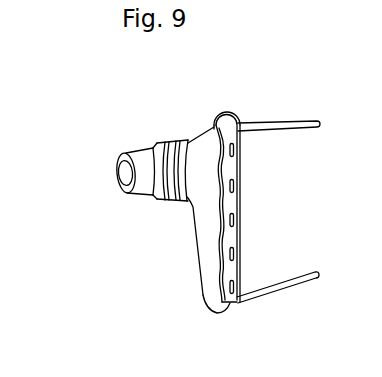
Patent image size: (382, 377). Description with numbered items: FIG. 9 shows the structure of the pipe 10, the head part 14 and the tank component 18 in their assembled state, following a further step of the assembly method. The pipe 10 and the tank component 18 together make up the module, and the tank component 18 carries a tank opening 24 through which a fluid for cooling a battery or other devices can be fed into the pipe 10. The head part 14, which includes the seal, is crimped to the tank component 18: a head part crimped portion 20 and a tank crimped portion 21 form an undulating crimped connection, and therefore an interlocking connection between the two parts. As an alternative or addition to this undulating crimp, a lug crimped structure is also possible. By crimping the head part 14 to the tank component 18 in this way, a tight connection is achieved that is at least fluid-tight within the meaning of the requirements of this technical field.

The pipe 10 is at (263, 132).
The head part 14 is at (228, 113).
The tank component 18 is at (198, 156).
The head part crimped portion 20 is at (236, 302).
The tank crimped portion 21 is at (218, 299).
The tank opening 24 is at (118, 177).